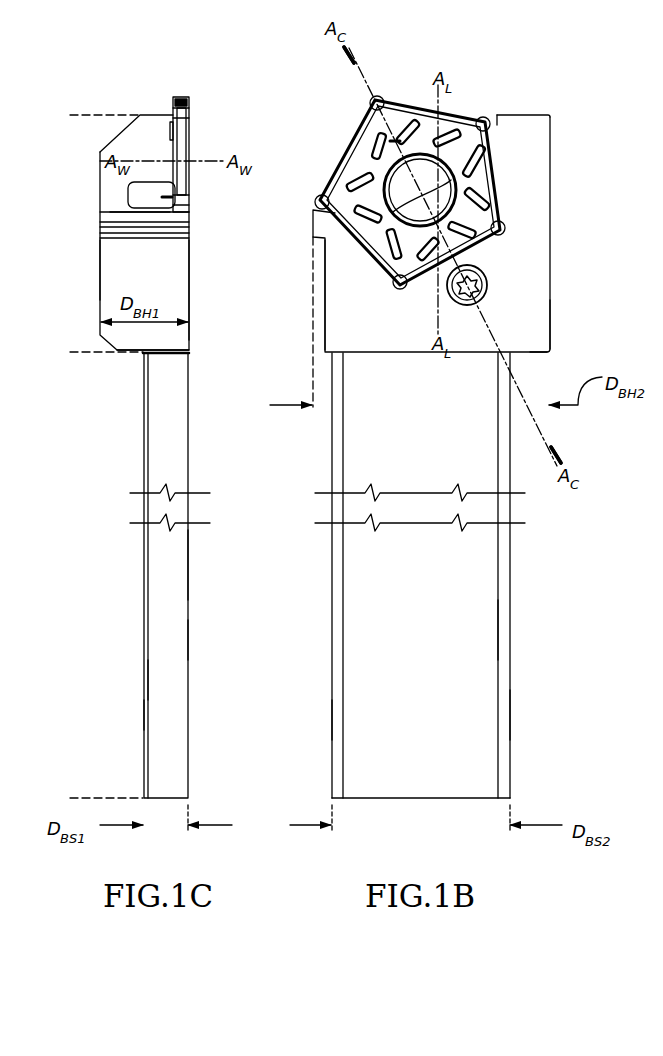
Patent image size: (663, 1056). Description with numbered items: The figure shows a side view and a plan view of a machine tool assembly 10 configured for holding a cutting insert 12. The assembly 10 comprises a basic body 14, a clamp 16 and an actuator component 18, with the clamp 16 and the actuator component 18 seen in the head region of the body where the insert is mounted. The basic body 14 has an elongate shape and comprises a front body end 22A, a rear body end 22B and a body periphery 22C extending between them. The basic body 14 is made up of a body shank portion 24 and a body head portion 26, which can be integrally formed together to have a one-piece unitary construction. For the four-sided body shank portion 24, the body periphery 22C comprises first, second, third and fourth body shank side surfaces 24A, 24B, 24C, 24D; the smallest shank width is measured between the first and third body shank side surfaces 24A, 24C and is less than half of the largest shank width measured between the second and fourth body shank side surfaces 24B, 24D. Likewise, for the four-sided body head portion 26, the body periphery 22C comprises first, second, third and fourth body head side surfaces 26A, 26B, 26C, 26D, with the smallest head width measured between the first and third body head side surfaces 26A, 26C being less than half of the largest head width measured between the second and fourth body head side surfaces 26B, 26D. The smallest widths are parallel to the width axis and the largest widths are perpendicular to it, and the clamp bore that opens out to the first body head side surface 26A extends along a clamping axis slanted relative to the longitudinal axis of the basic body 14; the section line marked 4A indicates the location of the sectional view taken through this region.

In FIG. 1C, the machine tool assembly 10 is at (201, 75).
In FIG. 1B, the machine tool assembly 10 is at (534, 56).
In FIG. 1C, the cutting insert 12 is at (196, 116).
In FIG. 1B, the cutting insert 12 is at (416, 104).
In FIG. 1C, the basic body 14 is at (199, 252).
In FIG. 1B, the basic body 14 is at (553, 212).
In FIG. 1B, the clamp 16 is at (458, 178).
In FIG. 1B, the actuator component 18 is at (488, 283).
In FIG. 1B, the front body end 22A is at (514, 102).
In FIG. 1B, the rear body end 22B is at (476, 814).
In FIG. 1C, the body periphery 22C is at (202, 542).
In FIG. 1B, the body periphery 22C is at (524, 541).
In FIG. 1C, the body shank portion 24 is at (76, 352).
In FIG. 1C, the first body shank side surface 24A is at (190, 640).
In FIG. 1B, the first body shank side surface 24A is at (470, 632).
In FIG. 1C, the second body shank side surface 24B is at (170, 678).
In FIG. 1B, the second body shank side surface 24B is at (332, 720).
In FIG. 1C, the third body shank side surface 24C is at (143, 715).
In FIG. 1B, the fourth body shank side surface 24D is at (510, 712).
In FIG. 1C, the body head portion 26 is at (76, 115).
In FIG. 1C, the first body head side surface 26A is at (189, 308).
In FIG. 1B, the first body head side surface 26A is at (527, 322).
In FIG. 1C, the second body head side surface 26B is at (155, 278).
In FIG. 1B, the second body head side surface 26B is at (330, 277).
In FIG. 1C, the third body head side surface 26C is at (100, 275).
In FIG. 1B, the fourth body head side surface 26D is at (552, 328).
In FIG. 1B, the section line of FIG. 4A is at (358, 50).